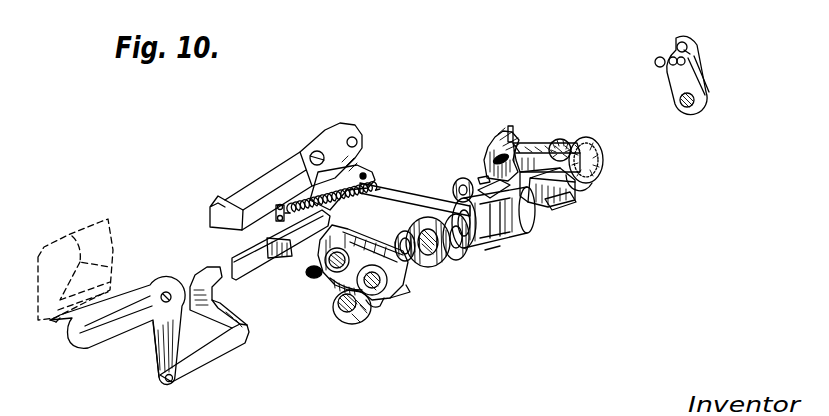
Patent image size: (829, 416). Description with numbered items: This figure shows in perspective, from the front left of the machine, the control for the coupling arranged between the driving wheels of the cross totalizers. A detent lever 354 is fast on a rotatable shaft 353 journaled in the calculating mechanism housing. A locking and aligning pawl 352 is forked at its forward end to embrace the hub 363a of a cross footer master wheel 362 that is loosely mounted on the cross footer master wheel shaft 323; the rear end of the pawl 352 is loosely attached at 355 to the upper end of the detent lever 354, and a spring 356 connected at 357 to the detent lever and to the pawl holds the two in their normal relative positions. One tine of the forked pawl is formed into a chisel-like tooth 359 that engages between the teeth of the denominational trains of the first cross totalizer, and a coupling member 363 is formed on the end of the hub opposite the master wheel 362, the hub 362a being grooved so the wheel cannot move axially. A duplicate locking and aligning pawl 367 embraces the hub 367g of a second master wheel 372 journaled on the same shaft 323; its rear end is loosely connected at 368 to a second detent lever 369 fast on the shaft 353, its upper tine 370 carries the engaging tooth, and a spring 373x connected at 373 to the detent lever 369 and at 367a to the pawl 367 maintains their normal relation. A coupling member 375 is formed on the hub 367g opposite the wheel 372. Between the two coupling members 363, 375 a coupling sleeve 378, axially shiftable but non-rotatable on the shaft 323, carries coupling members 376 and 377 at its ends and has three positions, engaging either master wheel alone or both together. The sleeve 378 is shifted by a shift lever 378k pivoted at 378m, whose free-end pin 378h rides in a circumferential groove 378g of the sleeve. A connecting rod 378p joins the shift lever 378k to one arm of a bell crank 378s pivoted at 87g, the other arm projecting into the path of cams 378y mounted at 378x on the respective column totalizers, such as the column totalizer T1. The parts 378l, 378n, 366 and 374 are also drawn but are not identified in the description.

The column totalizer T1 is at (90, 232).
The hairpin arm 378l is at (108, 320).
The cam 378y is at (58, 322).
The cam mounting 378x is at (62, 323).
The bell crank pivot 87g is at (167, 292).
The bell crank 378s is at (157, 372).
The connecting rod 378p is at (213, 360).
The shift lever pivot 378m is at (311, 156).
The second arm 378n is at (363, 172).
The shift lever 378k is at (413, 193).
The locking and aligning pawl 352 is at (358, 240).
The pawl attachment 355 is at (322, 262).
The spring connection 357 is at (320, 276).
The spring 356 is at (330, 292).
The detent lever 354 is at (340, 312).
The shaft 353 is at (345, 322).
The cross footer master wheel shaft 323 is at (374, 307).
The hub 363a is at (404, 291).
The chisel-like tooth 359 is at (403, 232).
The hub 362a is at (418, 266).
The cross footer master wheel 362 is at (428, 268).
The coupling member 363 is at (453, 258).
The coupling member 376 is at (471, 246).
The coupling sleeve 378 is at (490, 238).
The circumferential groove 378g is at (486, 252).
The coupling member 375 is at (520, 226).
The detent lever 369 is at (455, 192).
The pin 378h is at (483, 177).
The coupling member 377 is at (493, 187).
The bracket plate 366 is at (497, 137).
The pawl connection 368 is at (505, 130).
The pin 374 is at (510, 126).
The locking and aligning pawl 367 is at (527, 140).
The spring connection 367a is at (540, 148).
The upper tine 370 is at (603, 158).
The cross footer master wheel 372 is at (594, 180).
The hub 367g is at (575, 205).
The spring connection 373 is at (660, 57).
The spring 373x is at (690, 53).